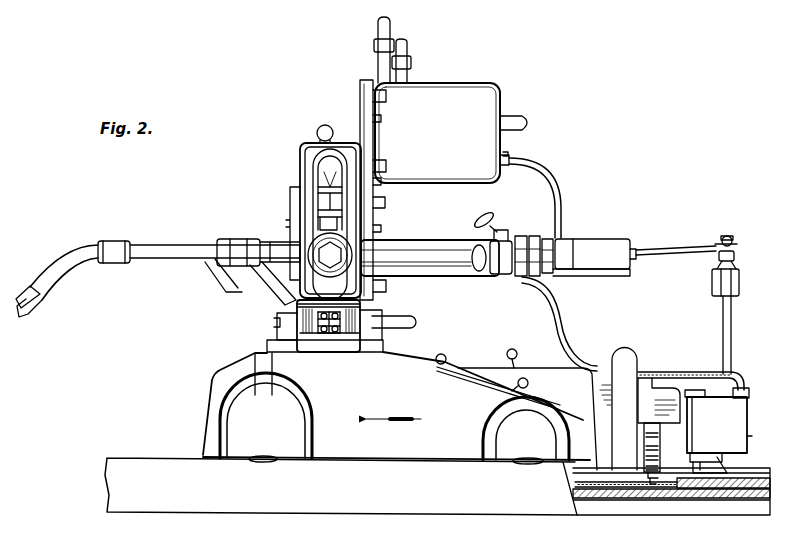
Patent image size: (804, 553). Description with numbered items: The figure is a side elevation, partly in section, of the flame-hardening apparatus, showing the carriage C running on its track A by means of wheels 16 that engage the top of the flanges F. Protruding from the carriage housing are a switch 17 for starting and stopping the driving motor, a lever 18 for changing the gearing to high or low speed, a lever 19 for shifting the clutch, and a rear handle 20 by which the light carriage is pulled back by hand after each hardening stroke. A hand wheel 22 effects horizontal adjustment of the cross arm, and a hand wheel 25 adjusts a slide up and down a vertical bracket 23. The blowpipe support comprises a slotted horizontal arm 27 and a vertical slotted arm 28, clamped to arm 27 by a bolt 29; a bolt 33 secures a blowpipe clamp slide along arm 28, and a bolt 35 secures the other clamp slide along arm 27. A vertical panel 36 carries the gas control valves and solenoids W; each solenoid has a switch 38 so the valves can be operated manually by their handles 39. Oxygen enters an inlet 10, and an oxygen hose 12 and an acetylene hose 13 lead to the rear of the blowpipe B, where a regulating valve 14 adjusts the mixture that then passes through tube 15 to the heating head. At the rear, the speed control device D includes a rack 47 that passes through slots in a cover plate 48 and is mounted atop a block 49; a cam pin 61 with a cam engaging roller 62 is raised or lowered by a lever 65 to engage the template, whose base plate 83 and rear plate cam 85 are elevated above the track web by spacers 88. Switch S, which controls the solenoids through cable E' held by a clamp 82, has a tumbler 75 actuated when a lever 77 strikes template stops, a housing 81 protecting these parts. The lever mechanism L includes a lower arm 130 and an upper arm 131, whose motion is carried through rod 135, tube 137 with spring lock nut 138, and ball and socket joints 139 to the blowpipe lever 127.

The inlet 10 is at (378, 28).
The oxygen hose 12 is at (408, 48).
The acetylene hose 13 is at (594, 256).
The regulating valve 14 is at (492, 230).
The tube 15 is at (158, 244).
The wheel 16 is at (261, 463).
The switch 17 is at (526, 379).
The lever 18 is at (444, 355).
The lever 19 is at (508, 352).
The rear handle 20 is at (624, 350).
The hand wheel 22 is at (217, 285).
The vertical bracket 23 is at (324, 186).
The hand wheel 25 is at (319, 131).
The slotted horizontal arm 27 is at (298, 311).
The vertical slotted arm 28 is at (300, 205).
The bolt 29 is at (327, 334).
The bolt 33 is at (338, 254).
The bolt 35 is at (336, 334).
The vertical panel 36 is at (362, 99).
The switch 38 is at (510, 161).
The handle 39 is at (512, 121).
The rack 47 is at (645, 428).
The cover plate 48 is at (660, 398).
The block 49 is at (659, 436).
The cam pin 61 is at (645, 466).
The cam engaging roller 62 is at (651, 484).
The lever 65 is at (659, 455).
The tumbler 75 is at (645, 447).
The lever 77 is at (726, 459).
The housing 81 is at (749, 438).
The clamp 82 is at (745, 388).
The base plate 83 is at (672, 491).
The rear speed regulating plate cam 85 is at (742, 489).
The spacer 88 is at (607, 492).
The lever 127 is at (676, 265).
The lower arm 130 is at (705, 476).
The upper arm 131 is at (700, 390).
The rod 135 is at (736, 257).
The spring chuck or tube 137 is at (723, 337).
The spring lock nut 138 is at (714, 286).
The ball and socket joint 139 is at (728, 236).
The solenoid W is at (455, 82).
The blowpipe B is at (418, 241).
The carriage C is at (223, 369).
The speed control device D is at (646, 384).
The cable E' is at (553, 264).
The rail or flange F is at (150, 458).
The track A is at (102, 485).
The lever mechanism L is at (686, 245).
The switch S is at (717, 425).